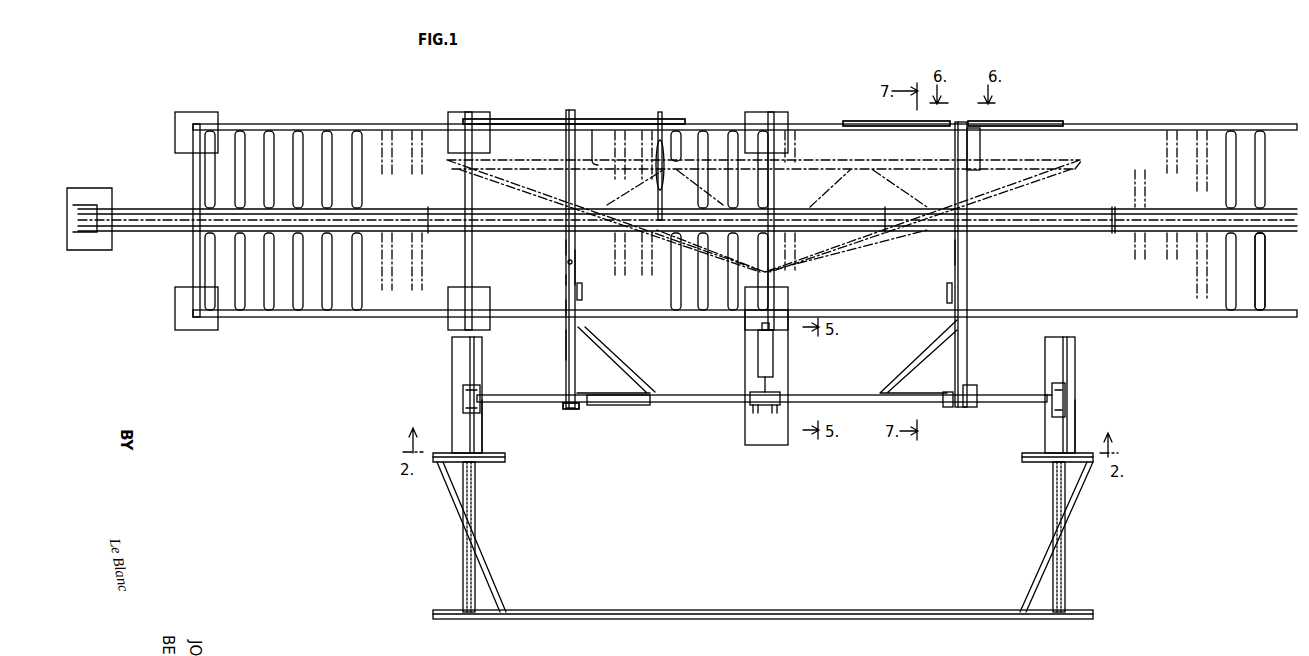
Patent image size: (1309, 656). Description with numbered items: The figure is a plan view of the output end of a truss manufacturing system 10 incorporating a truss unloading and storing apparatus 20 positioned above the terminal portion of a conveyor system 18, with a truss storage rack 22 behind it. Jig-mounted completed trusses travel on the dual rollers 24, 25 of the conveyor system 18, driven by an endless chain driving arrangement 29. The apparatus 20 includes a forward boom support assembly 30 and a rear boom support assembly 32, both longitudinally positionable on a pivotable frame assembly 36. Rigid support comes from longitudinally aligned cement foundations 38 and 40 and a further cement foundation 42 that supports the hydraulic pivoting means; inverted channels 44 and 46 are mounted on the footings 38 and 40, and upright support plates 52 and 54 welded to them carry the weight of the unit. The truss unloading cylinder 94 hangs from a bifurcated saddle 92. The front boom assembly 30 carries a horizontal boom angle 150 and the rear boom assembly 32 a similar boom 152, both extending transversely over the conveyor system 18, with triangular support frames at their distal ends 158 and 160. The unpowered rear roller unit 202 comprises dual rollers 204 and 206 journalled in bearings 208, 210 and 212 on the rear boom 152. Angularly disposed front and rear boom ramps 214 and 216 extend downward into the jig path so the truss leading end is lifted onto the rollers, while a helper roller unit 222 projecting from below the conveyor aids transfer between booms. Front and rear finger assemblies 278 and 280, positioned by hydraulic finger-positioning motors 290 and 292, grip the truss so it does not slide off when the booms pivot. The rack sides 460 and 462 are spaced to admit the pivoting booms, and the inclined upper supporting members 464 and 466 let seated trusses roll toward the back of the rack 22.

The truss / conveyor boom 10 is at (658, 100).
The conveyor system 18 is at (1245, 300).
The truss unloading and storing apparatus 20 is at (729, 468).
The truss storage rack 22 is at (1085, 552).
The dual roller 24 is at (1262, 178).
The dual roller 25 is at (1258, 278).
The endless chain driving arrangement 29 is at (166, 212).
The forward boom support assembly 30 is at (966, 262).
The rear boom support assembly 32 is at (566, 245).
The pivotable frame assembly 36 is at (702, 380).
The cement foundation 38 is at (1075, 418).
The cement foundation 40 is at (482, 425).
The cement foundation 42 is at (745, 425).
The inverted channel 44 is at (1075, 350).
The inverted channel 46 is at (455, 352).
The upright support plate 52 is at (1052, 405).
The upright support plate 54 is at (480, 395).
The bifurcated saddle 92 is at (780, 388).
The truss unloading cylinder 94 is at (775, 352).
The boom angle 150 is at (953, 252).
The boom 152 is at (580, 268).
The distal end 158 is at (963, 122).
The distal end 160 is at (570, 120).
The rear roller unit 202 is at (590, 309).
The dual roller 204 is at (566, 262).
The dual roller 206 is at (565, 348).
The bearing 208 is at (566, 124).
The bearing 210 is at (567, 280).
The bearing 212 is at (568, 408).
The front boom ramp 214 is at (980, 140).
The rear boom ramp 216 is at (598, 140).
The helper roller unit 222 is at (672, 118).
The front finger assembly 278 is at (948, 293).
The rear finger assembly 280 is at (584, 292).
The front hydraulic finger-positioning motor 290 is at (948, 393).
The rear hydraulic finger-positioning motor 292 is at (600, 386).
The side of storage rack 460 is at (1070, 534).
The side of storage rack 462 is at (486, 528).
The upper supporting member 464 is at (1050, 495).
The upper supporting member 466 is at (477, 490).